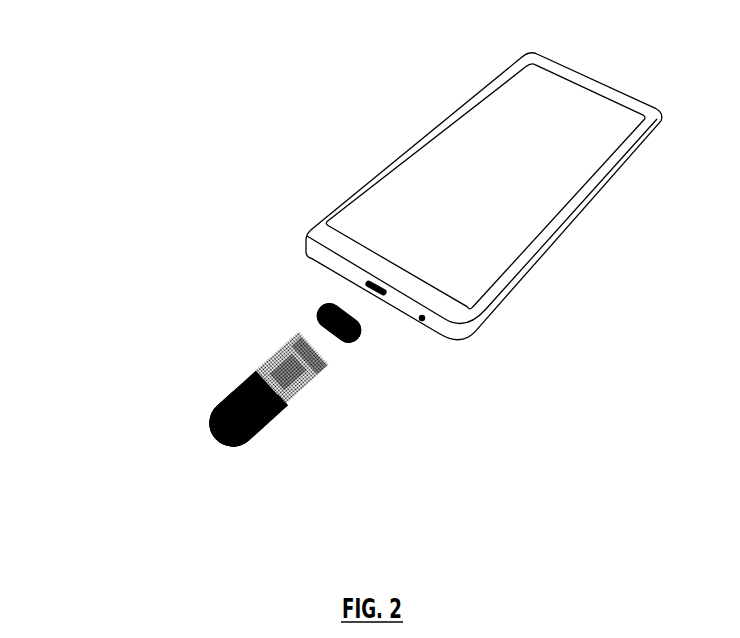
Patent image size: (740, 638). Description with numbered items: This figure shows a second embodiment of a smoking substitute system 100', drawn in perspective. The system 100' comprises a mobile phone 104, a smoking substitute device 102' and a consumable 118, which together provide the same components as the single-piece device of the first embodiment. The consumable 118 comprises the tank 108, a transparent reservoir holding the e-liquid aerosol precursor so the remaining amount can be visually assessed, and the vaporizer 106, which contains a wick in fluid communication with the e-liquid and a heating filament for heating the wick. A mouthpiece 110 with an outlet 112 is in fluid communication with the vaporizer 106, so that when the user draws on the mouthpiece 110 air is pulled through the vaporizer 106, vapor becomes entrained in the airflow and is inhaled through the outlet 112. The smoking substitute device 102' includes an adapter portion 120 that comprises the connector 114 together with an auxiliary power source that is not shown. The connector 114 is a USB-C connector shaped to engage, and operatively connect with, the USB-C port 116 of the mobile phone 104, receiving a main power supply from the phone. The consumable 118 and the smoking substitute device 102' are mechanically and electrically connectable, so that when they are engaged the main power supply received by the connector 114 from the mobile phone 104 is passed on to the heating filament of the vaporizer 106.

The smoking substitute system 100' is at (173, 67).
The smoking substitute device 102' is at (104, 339).
The mobile phone 104 is at (369, 113).
The vaporizer 106 is at (293, 358).
The tank 108 is at (258, 368).
The mouthpiece 110 is at (218, 405).
The outlet 112 is at (217, 438).
The connector 114 is at (341, 309).
The USB-C port 116 is at (379, 297).
The consumable 118 is at (273, 430).
The adapter portion 120 is at (318, 310).